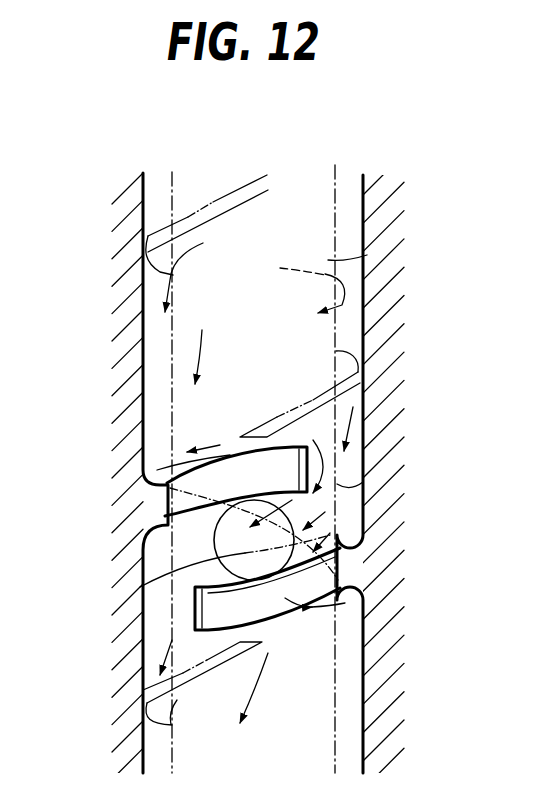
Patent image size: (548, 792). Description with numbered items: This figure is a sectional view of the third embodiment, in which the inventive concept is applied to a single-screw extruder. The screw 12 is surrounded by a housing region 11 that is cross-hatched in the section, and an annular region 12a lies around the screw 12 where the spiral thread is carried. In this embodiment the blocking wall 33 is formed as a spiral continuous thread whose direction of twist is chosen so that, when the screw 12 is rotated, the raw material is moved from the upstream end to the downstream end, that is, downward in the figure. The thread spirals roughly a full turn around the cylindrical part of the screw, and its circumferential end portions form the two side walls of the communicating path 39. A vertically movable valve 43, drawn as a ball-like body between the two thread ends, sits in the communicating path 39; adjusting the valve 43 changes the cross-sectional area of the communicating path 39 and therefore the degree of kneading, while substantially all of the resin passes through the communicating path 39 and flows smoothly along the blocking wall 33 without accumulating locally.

The inner shaft 11 is at (362, 691).
The screw 12 is at (363, 254).
The helical groove of sleeve 12a is at (363, 482).
The blocking wall 33 is at (285, 598).
The communicating path 39 is at (140, 587).
The valve 43 is at (297, 502).